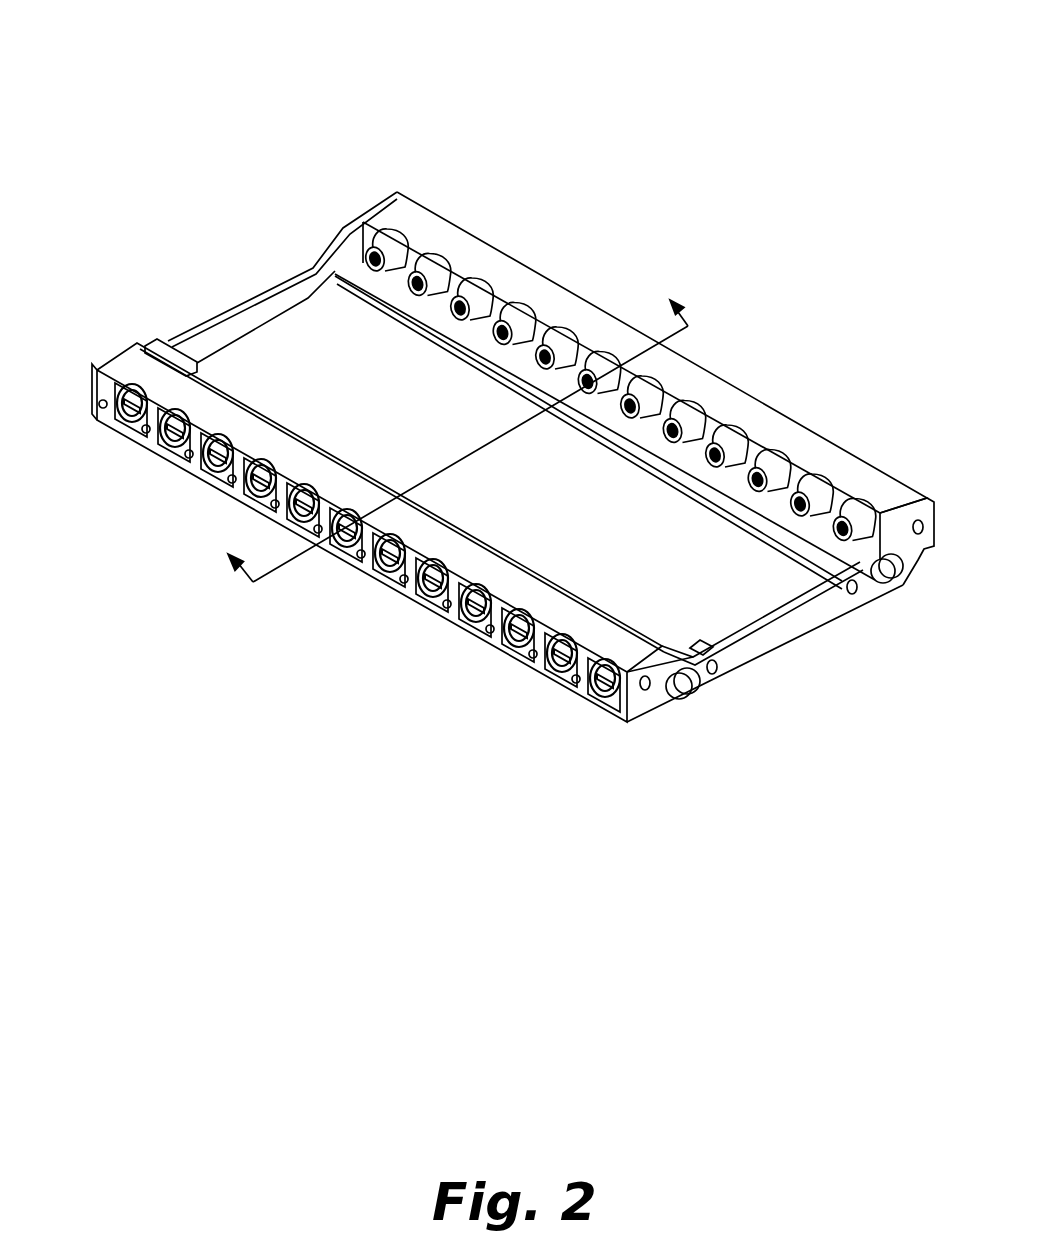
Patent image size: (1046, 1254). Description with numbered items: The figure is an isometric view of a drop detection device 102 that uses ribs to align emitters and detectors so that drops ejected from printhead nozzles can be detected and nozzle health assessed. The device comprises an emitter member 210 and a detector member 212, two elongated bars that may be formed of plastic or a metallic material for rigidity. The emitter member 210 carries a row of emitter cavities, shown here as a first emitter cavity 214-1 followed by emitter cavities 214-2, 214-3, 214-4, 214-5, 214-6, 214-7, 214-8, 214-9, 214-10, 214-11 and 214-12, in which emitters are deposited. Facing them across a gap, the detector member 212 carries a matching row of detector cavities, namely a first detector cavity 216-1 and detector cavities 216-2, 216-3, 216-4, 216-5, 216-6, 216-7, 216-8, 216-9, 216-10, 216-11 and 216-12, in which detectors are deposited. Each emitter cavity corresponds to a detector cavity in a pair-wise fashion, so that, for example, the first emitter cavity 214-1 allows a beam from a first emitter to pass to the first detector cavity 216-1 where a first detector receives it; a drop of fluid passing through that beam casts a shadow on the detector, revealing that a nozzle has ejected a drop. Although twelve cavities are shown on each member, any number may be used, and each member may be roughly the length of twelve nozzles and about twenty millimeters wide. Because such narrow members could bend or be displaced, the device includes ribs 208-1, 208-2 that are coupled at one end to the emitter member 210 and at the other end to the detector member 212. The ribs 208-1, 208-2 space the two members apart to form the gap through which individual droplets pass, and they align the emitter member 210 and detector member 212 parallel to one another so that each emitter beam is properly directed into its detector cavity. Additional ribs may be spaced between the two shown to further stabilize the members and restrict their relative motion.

The drop detection device 102 is at (246, 91).
The rib 208-1 is at (236, 330).
The rib 208-2 is at (780, 637).
The emitter member 210 is at (380, 208).
The detector member 212 is at (120, 356).
The first emitter cavity 214-1 is at (382, 243).
The emitter cavity 214-2 is at (437, 275).
The emitter cavity 214-3 is at (480, 305).
The emitter cavity 214-4 is at (520, 325).
The emitter cavity 214-5 is at (560, 348).
The emitter cavity 214-6 is at (608, 372).
The emitter cavity 214-7 is at (643, 395).
The emitter cavity 214-8 is at (682, 419).
The emitter cavity 214-9 is at (724, 443).
The emitter cavity 214-10 is at (769, 465).
The emitter cavity 214-11 is at (808, 492).
The emitter cavity 214-12 is at (858, 522).
The first detector cavity 216-1 is at (122, 428).
The detector cavity 216-2 is at (167, 447).
The detector cavity 216-3 is at (203, 468).
The detector cavity 216-4 is at (245, 482).
The detector cavity 216-5 is at (282, 502).
The detector cavity 216-6 is at (348, 548).
The detector cavity 216-7 is at (388, 572).
The detector cavity 216-8 is at (432, 597).
The detector cavity 216-9 is at (482, 622).
The detector cavity 216-10 is at (520, 648).
The detector cavity 216-11 is at (562, 672).
The detector cavity 216-12 is at (603, 696).